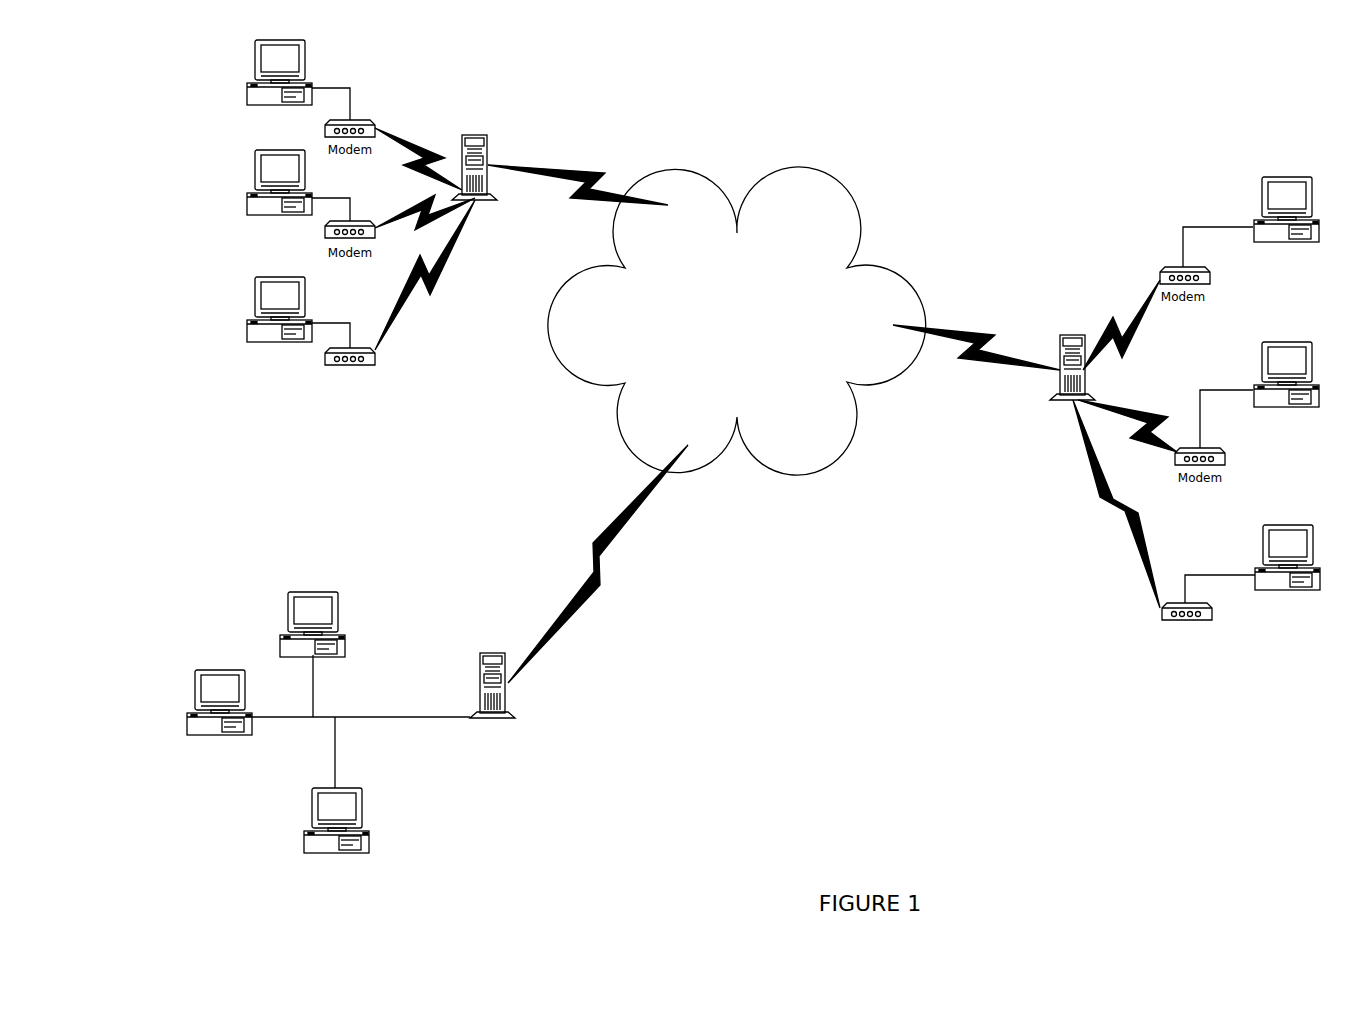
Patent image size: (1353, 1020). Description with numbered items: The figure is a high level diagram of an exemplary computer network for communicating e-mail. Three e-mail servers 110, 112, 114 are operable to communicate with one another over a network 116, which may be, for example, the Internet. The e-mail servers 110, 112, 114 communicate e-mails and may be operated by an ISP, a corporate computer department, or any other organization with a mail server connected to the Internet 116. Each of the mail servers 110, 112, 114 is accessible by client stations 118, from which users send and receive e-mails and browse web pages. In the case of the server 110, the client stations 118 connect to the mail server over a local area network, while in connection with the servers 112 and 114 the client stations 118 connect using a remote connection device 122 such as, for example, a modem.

The e-mail server 110 is at (505, 705).
The e-mail server 112 is at (488, 148).
The e-mail server 114 is at (1073, 335).
The network 116 is at (790, 441).
The client station 118 is at (248, 88).
The remote connection device 122 is at (375, 353).